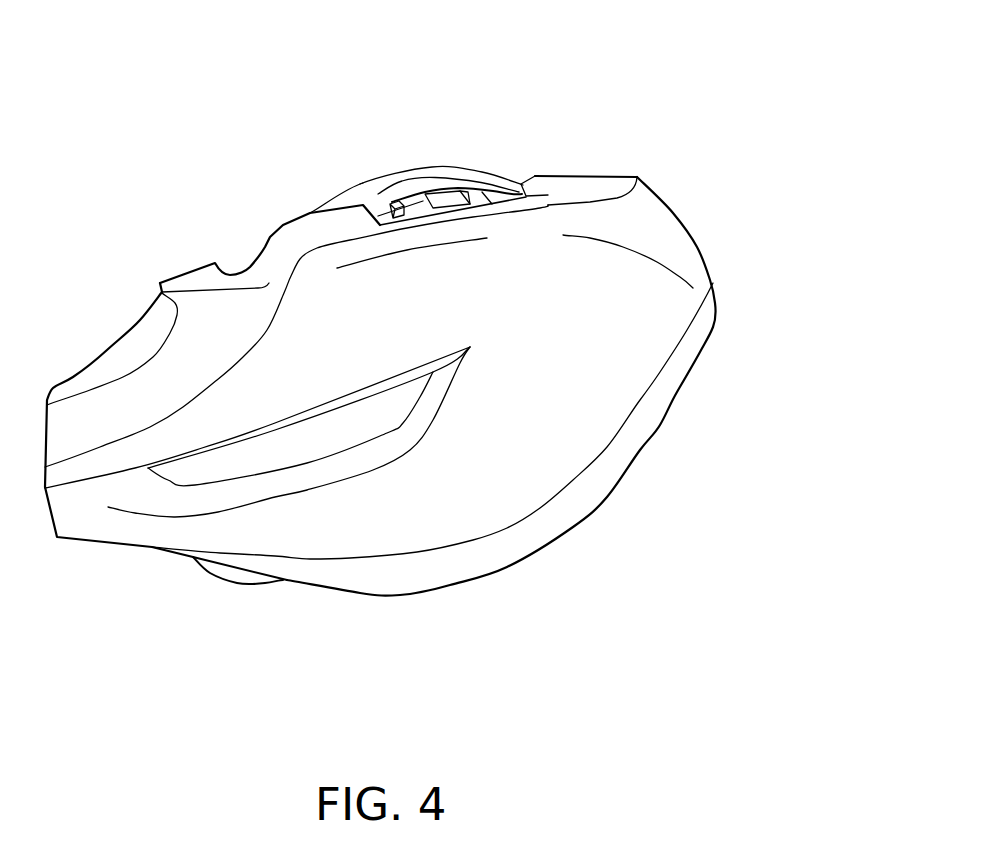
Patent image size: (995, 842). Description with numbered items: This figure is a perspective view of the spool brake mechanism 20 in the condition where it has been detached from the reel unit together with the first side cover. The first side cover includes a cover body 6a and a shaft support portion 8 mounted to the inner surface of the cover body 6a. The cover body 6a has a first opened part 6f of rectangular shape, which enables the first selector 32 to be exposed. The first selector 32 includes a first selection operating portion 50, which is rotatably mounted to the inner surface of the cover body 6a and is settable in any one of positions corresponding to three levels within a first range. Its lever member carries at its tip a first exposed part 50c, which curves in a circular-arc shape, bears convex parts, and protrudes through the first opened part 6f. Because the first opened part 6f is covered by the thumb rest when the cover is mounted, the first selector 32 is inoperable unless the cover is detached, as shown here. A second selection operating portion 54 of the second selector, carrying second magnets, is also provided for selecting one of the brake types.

The cover body 6a is at (540, 433).
The first opened part 6f is at (383, 201).
The shaft support portion 8 is at (420, 172).
The spool brake mechanism 20 is at (443, 153).
The first selector 32 is at (447, 184).
The first selection operating portion 50 is at (438, 191).
The first exposed part 50c is at (452, 200).
The second selection operating portion 54 is at (235, 583).